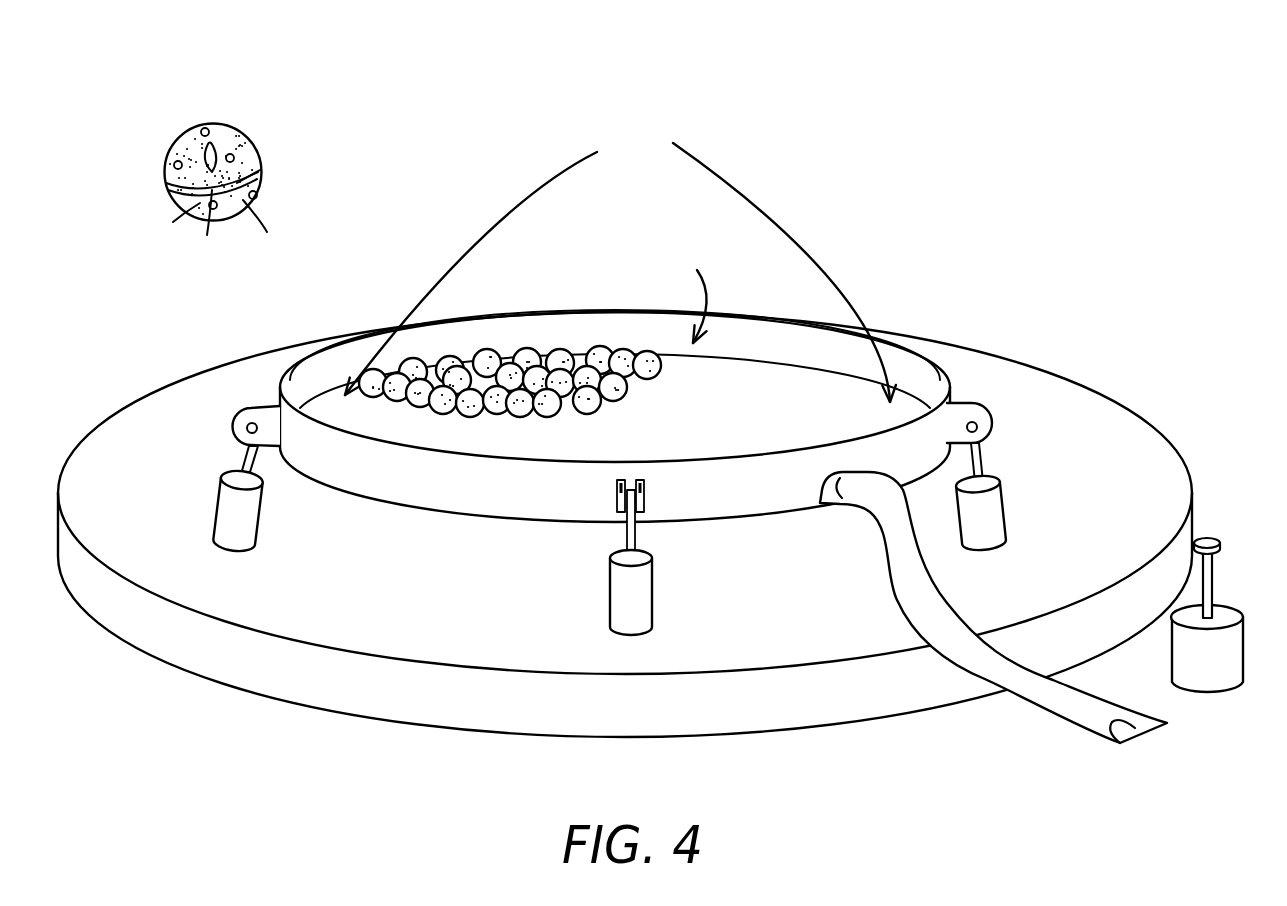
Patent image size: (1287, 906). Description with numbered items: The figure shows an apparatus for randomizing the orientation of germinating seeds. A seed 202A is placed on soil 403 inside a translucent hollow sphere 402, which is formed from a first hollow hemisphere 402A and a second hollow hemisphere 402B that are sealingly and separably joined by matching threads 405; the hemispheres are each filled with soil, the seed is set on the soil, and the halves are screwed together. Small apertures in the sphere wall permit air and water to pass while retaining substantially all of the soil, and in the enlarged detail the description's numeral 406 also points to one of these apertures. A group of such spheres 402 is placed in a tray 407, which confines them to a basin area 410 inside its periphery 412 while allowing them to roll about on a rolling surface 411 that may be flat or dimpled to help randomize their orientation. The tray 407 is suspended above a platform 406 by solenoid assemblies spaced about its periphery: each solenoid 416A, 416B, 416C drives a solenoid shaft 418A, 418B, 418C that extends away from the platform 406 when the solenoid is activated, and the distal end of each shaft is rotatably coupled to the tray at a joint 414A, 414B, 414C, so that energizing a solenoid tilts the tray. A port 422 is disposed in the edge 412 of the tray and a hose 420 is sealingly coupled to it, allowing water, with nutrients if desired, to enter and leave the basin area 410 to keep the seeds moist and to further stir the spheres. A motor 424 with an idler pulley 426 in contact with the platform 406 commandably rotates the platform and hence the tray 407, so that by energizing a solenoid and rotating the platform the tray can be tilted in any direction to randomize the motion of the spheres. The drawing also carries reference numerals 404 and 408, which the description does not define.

The hollow sphere 402 is at (490, 347).
The first hollow hemisphere 402A is at (230, 124).
The second hollow hemisphere 402B is at (196, 208).
The soil 403 is at (243, 200).
The band 404 is at (262, 174).
The matching threads 405 is at (257, 167).
The platform 406 is at (1090, 390).
The tray 407 is at (674, 299).
The ring wall 408 is at (500, 497).
The basin area 410 is at (620, 270).
The rolling surface 411 is at (772, 420).
The periphery 412 is at (815, 340).
The joint 414A is at (644, 503).
The joint 414B is at (233, 425).
The joint 414C is at (990, 428).
The solenoid 416A is at (652, 585).
The solenoid 416B is at (217, 502).
The solenoid 416C is at (1003, 500).
The solenoid shaft 418A is at (612, 540).
The solenoid shaft 418B is at (260, 462).
The solenoid shaft 418C is at (982, 462).
The hose 420 is at (1093, 735).
The port 422 is at (841, 508).
The motor 424 is at (1183, 685).
The idler pulley 426 is at (1212, 568).
The seed 202A is at (210, 195).